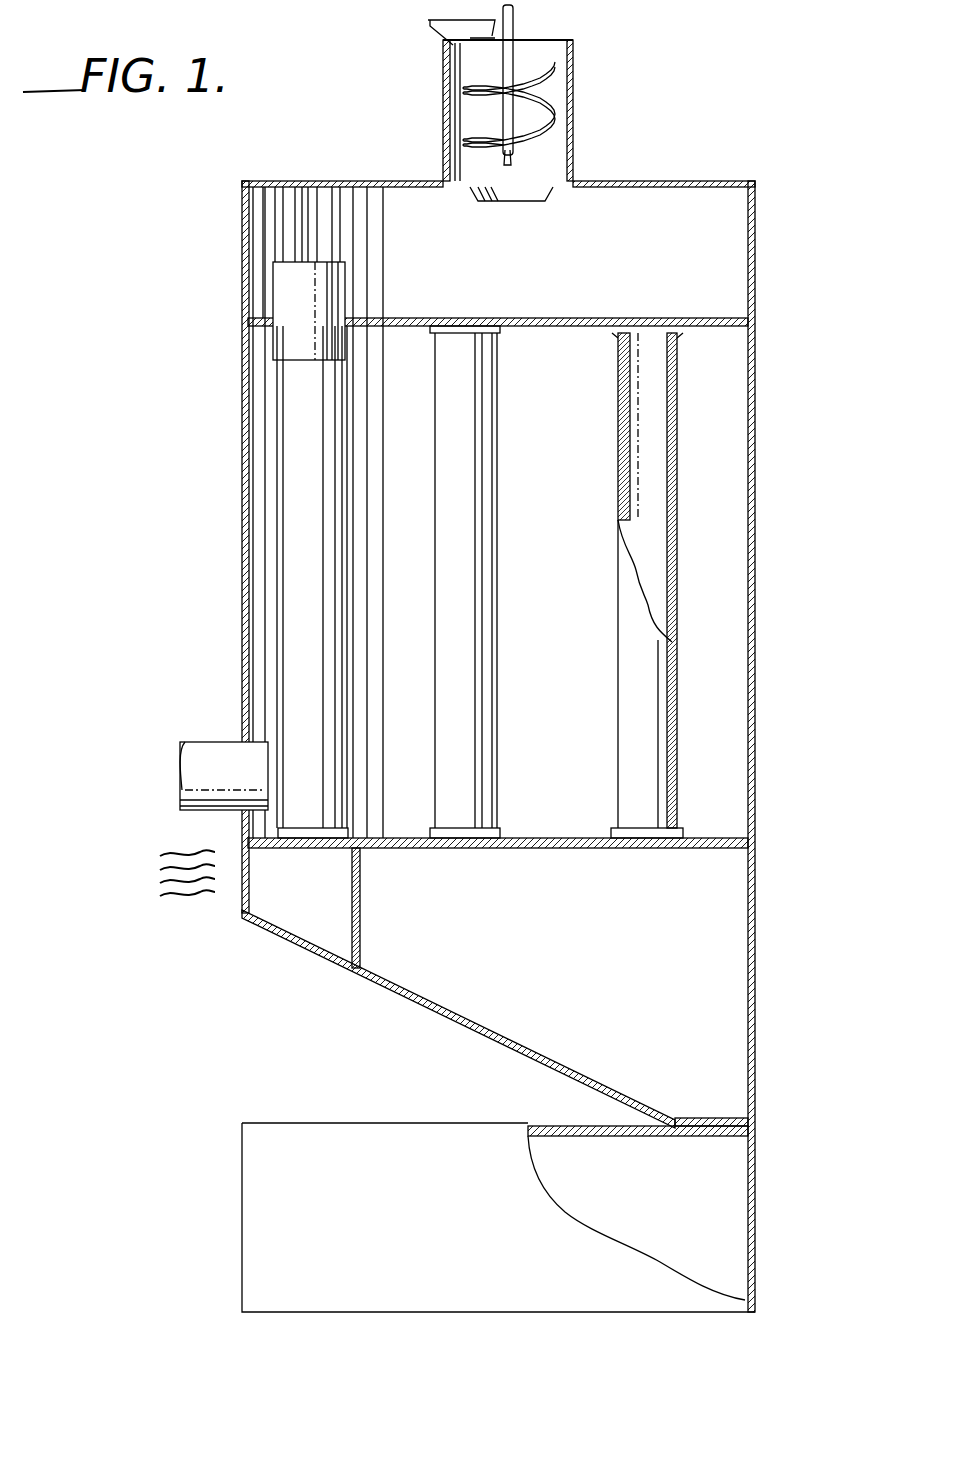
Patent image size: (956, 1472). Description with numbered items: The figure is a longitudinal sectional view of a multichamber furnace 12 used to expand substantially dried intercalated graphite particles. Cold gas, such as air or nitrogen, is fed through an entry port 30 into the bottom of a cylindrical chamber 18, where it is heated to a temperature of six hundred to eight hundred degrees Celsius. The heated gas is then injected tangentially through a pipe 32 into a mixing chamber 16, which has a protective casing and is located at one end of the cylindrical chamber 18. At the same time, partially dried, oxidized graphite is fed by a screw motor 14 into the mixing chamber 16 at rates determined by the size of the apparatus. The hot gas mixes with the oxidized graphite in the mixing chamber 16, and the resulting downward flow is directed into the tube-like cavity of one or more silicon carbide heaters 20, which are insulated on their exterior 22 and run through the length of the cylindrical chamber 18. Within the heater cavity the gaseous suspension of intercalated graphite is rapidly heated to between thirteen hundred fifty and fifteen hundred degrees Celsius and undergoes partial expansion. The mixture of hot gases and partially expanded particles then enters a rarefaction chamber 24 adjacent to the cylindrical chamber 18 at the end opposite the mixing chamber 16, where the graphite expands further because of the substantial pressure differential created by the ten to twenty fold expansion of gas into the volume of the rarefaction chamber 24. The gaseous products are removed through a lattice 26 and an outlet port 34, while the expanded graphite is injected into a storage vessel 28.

The multichamber furnace 12 is at (755, 603).
The screw motor 14 is at (548, 73).
The mixing chamber 16 is at (675, 200).
The cylindrical chamber 18 is at (740, 438).
The silicon carbide heater 20 is at (632, 467).
The exterior insulation of heater 22 is at (293, 590).
The rarefaction chamber 24 is at (468, 985).
The lattice 26 is at (352, 930).
The storage vessel 28 is at (718, 1198).
The entry port 30 is at (202, 745).
The pipe 32 is at (280, 348).
The outlet port 34 is at (240, 900).